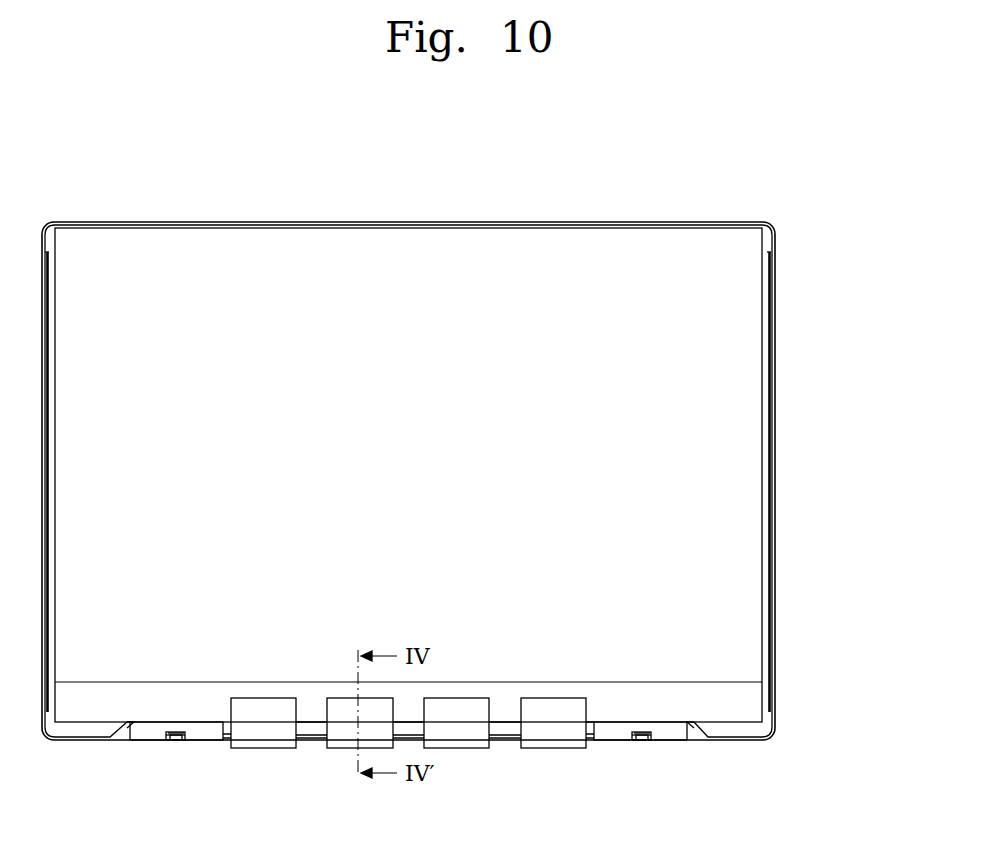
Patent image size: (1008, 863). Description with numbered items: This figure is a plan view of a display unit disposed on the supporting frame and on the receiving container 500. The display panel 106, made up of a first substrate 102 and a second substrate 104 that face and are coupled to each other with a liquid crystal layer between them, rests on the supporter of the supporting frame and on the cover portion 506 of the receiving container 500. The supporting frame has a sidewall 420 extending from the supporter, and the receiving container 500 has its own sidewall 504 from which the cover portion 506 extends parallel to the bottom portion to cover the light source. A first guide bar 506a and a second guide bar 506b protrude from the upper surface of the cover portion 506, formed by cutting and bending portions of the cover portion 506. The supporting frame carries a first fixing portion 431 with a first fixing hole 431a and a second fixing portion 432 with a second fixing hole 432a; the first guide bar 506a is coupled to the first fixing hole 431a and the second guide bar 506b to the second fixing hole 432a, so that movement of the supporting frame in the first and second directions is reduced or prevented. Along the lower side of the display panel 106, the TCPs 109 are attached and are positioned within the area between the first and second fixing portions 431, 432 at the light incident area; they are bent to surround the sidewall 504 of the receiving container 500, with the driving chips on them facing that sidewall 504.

The receiving container 500 is at (650, 218).
The sidewall 420 is at (775, 241).
The sidewall 504 is at (772, 413).
The display panel 106 is at (850, 590).
The first substrate 102 is at (752, 596).
The second substrate 104 is at (752, 696).
The second fixing portion 432 is at (208, 745).
The second fixing hole 432a is at (175, 745).
The second guide bar 506b is at (175, 732).
The TCPs 109 is at (452, 742).
The cover portion 506 is at (505, 733).
The first fixing portion 431 is at (680, 745).
The first fixing hole 431a is at (640, 745).
The first guide bar 506a is at (642, 732).